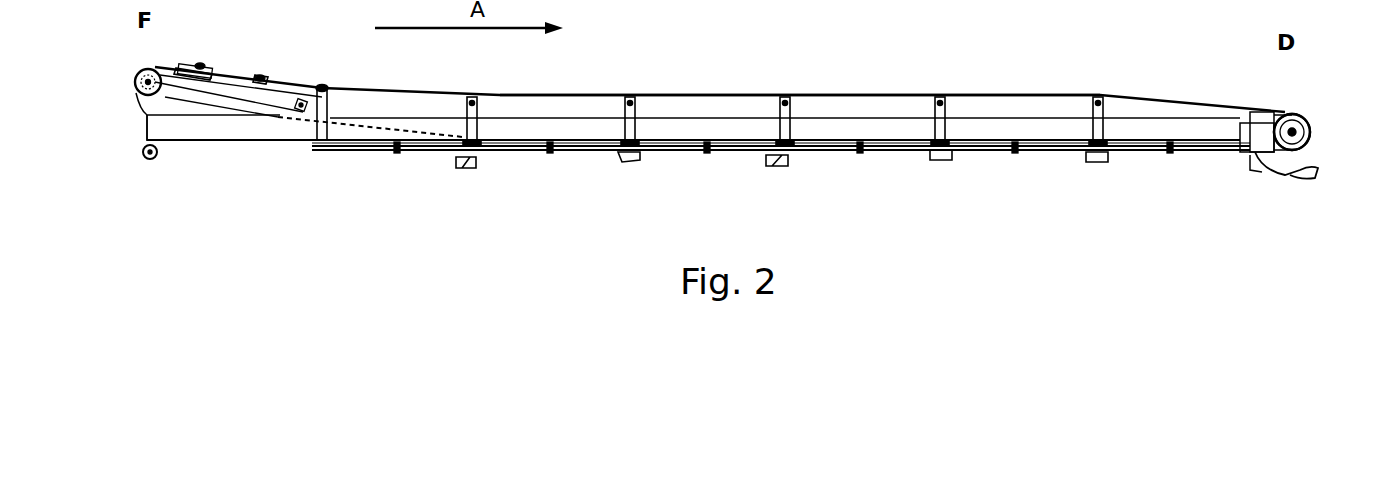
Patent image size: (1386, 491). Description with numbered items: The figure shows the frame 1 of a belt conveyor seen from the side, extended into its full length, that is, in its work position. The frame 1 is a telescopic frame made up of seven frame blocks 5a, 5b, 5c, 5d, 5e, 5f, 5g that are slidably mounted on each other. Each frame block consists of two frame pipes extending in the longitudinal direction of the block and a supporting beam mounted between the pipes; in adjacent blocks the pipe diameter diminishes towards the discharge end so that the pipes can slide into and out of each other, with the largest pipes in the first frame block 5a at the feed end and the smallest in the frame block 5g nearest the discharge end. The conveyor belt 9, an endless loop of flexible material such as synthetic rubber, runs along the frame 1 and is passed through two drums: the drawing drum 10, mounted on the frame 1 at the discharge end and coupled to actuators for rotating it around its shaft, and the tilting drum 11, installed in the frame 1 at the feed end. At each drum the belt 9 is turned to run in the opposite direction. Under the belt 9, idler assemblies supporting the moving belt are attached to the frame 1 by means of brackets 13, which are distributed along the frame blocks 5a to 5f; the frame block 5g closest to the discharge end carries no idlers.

The frame 1 is at (928, 50).
The first frame block 5a is at (214, 158).
The frame block 5b is at (373, 165).
The frame block 5c is at (530, 165).
The frame block 5d is at (683, 165).
The frame block 5e is at (840, 165).
The frame block 5f is at (986, 165).
The frame block 5g is at (1150, 165).
The conveyor belt 9 is at (800, 95).
The drawing drum 10 is at (1295, 116).
The tilting drum 11 is at (136, 95).
The brackets 13 is at (200, 74).